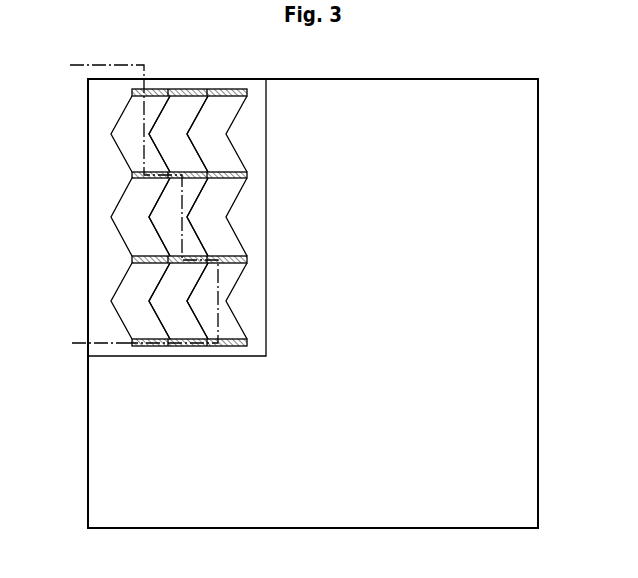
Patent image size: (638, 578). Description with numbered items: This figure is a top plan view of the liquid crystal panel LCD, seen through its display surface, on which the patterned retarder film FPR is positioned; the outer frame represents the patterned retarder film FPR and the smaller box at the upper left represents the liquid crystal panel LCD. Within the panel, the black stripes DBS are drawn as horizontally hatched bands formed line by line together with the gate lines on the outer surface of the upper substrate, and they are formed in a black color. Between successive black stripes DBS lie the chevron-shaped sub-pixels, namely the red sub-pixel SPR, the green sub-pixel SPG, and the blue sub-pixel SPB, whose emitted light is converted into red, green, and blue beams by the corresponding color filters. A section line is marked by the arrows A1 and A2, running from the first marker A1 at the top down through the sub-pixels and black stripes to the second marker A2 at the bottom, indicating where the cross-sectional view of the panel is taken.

The patterned retarder film FPR is at (539, 303).
The liquid crystal panel LCD is at (88, 258).
The black stripes DBS is at (132, 175).
The red sub-pixel SPR is at (148, 335).
The green sub-pixel SPG is at (188, 335).
The blue sub-pixel SPB is at (226, 335).
The section line start A1 is at (63, 65).
The section line end A2 is at (63, 343).